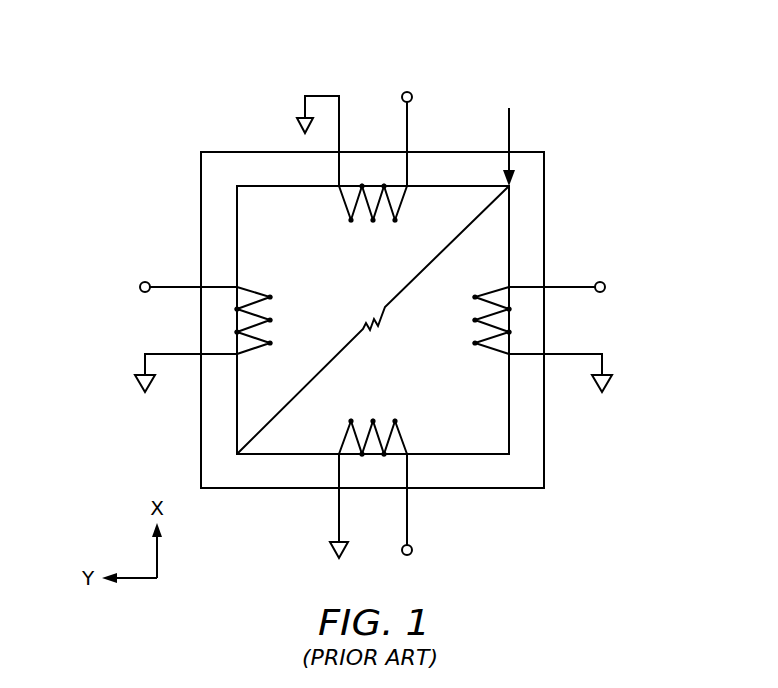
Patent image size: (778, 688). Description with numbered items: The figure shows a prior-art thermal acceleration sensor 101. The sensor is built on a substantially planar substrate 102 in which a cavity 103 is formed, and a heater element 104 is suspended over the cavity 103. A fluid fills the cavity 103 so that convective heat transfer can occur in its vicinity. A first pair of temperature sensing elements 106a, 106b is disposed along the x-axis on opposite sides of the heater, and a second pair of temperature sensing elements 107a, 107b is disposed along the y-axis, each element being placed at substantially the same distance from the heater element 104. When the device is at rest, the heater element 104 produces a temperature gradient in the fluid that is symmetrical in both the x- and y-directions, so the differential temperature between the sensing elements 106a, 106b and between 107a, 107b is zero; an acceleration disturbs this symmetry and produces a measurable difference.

The thermal acceleration sensor 101 is at (214, 58).
The substantially planar substrate 102 is at (260, 152).
The cavity 103 is at (440, 453).
The heater element 104 is at (452, 241).
The temperature sensing element 106a is at (372, 228).
The temperature sensing element 106b is at (377, 412).
The temperature sensing element 107a is at (272, 297).
The temperature sensing element 107b is at (468, 322).